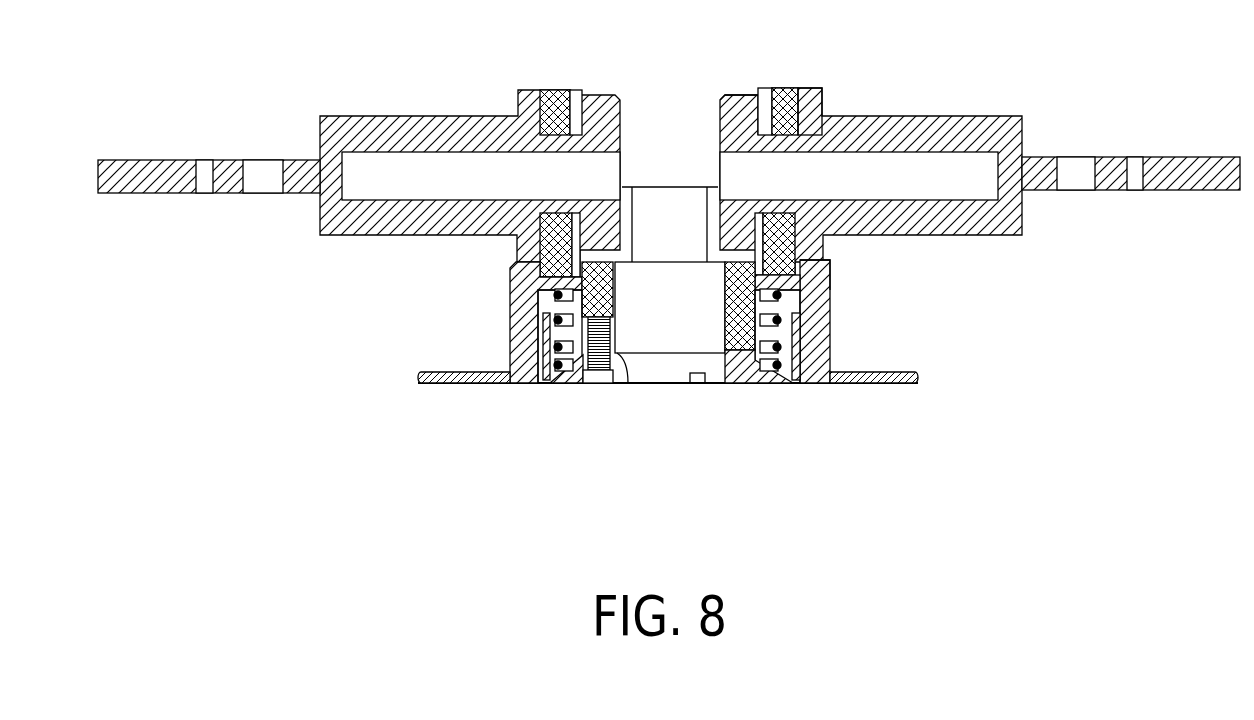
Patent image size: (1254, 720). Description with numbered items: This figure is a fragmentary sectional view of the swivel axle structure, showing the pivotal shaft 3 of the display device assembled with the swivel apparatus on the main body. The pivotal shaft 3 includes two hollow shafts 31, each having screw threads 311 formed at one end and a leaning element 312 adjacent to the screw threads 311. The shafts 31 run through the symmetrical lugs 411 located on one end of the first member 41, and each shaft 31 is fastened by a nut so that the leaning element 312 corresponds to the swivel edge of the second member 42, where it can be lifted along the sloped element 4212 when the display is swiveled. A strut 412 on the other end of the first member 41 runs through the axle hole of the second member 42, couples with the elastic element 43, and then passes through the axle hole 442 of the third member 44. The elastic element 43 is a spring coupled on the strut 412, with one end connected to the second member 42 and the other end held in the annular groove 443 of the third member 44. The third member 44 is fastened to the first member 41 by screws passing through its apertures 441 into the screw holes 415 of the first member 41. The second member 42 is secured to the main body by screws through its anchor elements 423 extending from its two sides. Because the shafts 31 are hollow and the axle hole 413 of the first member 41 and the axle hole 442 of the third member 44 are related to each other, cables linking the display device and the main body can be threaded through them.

The pivotal shaft 3 is at (976, 70).
The shaft 31 is at (1180, 157).
The screw threads 311 is at (720, 137).
The leaning element 312 is at (810, 89).
The lug 411 is at (780, 89).
The strut 412 is at (800, 328).
The axle hole 413 is at (672, 215).
The screw holes 415 is at (560, 305).
The first member 41 is at (802, 357).
The second member 42 is at (830, 292).
The sloped element 4212 is at (832, 258).
The anchor element 423 is at (872, 383).
The elastic element 43 is at (540, 330).
The third member 44 is at (755, 383).
The aperture 441 is at (627, 383).
The axle hole 442 is at (680, 383).
The annular groove 443 is at (557, 383).